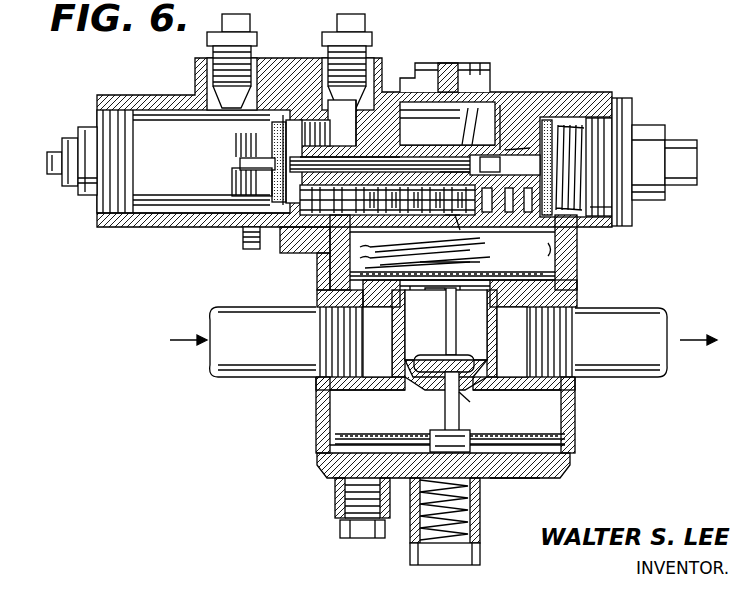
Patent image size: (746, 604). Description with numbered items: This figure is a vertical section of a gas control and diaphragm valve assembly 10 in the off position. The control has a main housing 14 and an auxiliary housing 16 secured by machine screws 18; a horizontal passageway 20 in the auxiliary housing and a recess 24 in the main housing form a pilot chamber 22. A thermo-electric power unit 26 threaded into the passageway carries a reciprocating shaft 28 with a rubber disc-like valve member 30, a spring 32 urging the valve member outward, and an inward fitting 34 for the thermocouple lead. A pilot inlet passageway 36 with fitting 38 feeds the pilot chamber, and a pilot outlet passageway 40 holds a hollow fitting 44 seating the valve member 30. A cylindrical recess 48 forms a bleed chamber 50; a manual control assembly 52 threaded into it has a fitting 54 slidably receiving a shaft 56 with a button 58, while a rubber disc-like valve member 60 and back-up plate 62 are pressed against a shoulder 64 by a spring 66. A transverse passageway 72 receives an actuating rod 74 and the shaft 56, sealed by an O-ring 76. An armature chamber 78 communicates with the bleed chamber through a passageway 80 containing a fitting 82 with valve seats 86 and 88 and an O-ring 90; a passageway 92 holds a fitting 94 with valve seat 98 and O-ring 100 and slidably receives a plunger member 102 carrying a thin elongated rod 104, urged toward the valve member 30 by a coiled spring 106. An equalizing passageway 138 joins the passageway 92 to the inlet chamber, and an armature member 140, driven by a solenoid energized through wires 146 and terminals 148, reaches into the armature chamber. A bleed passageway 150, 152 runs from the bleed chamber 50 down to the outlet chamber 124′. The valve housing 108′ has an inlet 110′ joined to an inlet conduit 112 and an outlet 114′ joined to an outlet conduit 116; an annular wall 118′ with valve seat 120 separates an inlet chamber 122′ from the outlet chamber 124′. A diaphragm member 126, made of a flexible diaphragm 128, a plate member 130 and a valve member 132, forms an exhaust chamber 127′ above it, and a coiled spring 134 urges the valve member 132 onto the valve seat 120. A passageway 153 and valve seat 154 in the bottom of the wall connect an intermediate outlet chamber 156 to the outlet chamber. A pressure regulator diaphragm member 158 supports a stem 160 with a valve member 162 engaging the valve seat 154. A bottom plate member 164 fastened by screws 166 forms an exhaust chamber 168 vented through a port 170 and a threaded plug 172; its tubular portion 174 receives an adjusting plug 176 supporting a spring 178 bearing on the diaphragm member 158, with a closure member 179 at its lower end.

The valve assembly 10 is at (548, 75).
The main housing 14 is at (386, 58).
The auxiliary housing 16 is at (187, 93).
The machine screws 18 is at (245, 245).
The passageway 20 is at (237, 215).
The pilot chamber 22 is at (245, 195).
The recess 24 is at (293, 115).
The thermo-electric power unit 26 is at (160, 212).
The reciprocating shaft 28 is at (236, 158).
The valve member 30 is at (285, 123).
The spring 32 is at (245, 158).
The inward fitting 34 is at (78, 135).
The pilot inlet passageway 36 is at (270, 125).
The fitting 38 is at (250, 34).
The pilot outlet passageway 40 is at (358, 125).
The hollow fitting 44 is at (315, 125).
The cylindrical recess 48 is at (555, 118).
The bleed chamber 50 is at (580, 125).
The manual control assembly 52 is at (656, 125).
The fitting 54 is at (632, 100).
The shaft 56 is at (506, 150).
The button 58 is at (690, 145).
The valve member 60 is at (578, 240).
The back-up plate 62 is at (605, 207).
The shoulder 64 is at (560, 116).
The spring 66 is at (595, 158).
The passageway 72 is at (395, 153).
The actuating rod 74 is at (405, 163).
The O-ring 76 is at (508, 127).
The armature chamber 78 is at (451, 227).
The passageway 80 is at (518, 209).
The fitting 82 is at (540, 209).
The valve seat 86 is at (456, 173).
The valve seat 88 is at (545, 165).
The O-ring 90 is at (496, 204).
The passageway 92 is at (345, 185).
The fitting 94 is at (450, 211).
The valve seat 98 is at (387, 190).
The O-ring 100 is at (415, 169).
The plunger member 102 is at (305, 232).
The rod 104 is at (452, 221).
The coiled spring 106 is at (347, 252).
The valve housing 108′ is at (316, 425).
The inlet 110′ is at (312, 384).
The inlet conduit 112 is at (240, 372).
The outlet 114′ is at (578, 378).
The outlet conduit 116 is at (650, 372).
The annular wall 118′ is at (446, 325).
The valve seat 120 is at (395, 283).
The inlet chamber 122′ is at (374, 356).
The outlet chamber 124′ is at (504, 389).
The diaphragm member 126 is at (453, 298).
The exhaust chamber 127′ is at (388, 247).
The flexible diaphragm 128 is at (317, 295).
The plate member 130 is at (556, 272).
The valve member 132 is at (462, 284).
The coiled spring 134 is at (482, 262).
The equalizing passageway 138 is at (318, 262).
The armature member 140 is at (462, 244).
The wires 146 is at (466, 108).
The terminals 148 is at (485, 80).
The bleed passageway 150 is at (556, 250).
The bleed passageway 152 is at (578, 292).
The passageway 153 is at (472, 398).
The valve seat 154 is at (447, 417).
The intermediate outlet chamber 156 is at (424, 336).
The pressure regulator diaphragm member 158 is at (484, 441).
The stem 160 is at (445, 406).
The valve member 162 is at (440, 356).
The bottom plate member 164 is at (508, 484).
The screws 166 is at (568, 468).
The exhaust chamber 168 is at (374, 452).
The port 170 is at (355, 487).
The threaded plug 172 is at (345, 530).
The tubular portion 174 is at (478, 540).
The adjusting plug 176 is at (478, 512).
The spring 178 is at (410, 505).
The closure member 179 is at (450, 565).